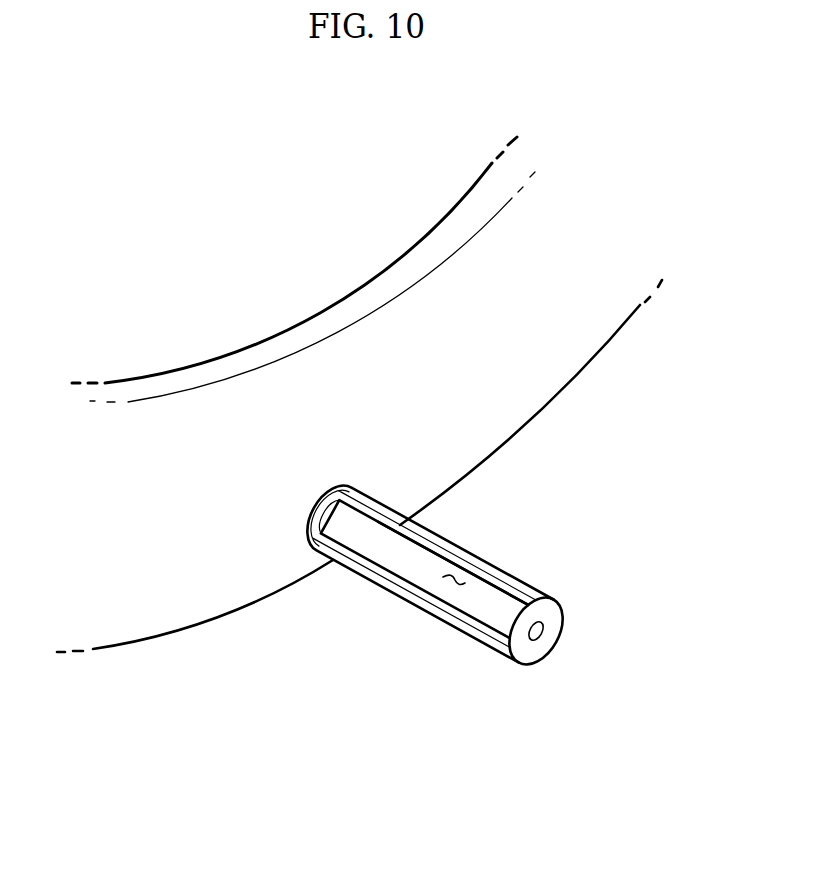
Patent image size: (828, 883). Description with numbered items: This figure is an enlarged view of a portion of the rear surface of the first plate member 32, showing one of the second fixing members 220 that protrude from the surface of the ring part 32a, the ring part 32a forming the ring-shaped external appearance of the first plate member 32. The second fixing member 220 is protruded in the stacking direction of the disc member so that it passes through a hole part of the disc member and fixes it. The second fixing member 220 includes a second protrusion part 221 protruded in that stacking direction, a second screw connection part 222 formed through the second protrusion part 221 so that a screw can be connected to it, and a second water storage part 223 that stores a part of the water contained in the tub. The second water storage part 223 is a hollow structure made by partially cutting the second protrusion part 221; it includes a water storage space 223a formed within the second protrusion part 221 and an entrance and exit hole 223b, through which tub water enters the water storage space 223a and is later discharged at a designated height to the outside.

The first plate member 32 is at (224, 618).
The ring part 32a is at (530, 395).
The second fixing member 220 is at (480, 601).
The second protrusion part 221 is at (502, 650).
The second screw connection part 222 is at (541, 641).
The second water storage part 223 is at (598, 496).
The water storage space 223a is at (463, 583).
The entrance and exit hole 223b is at (405, 520).